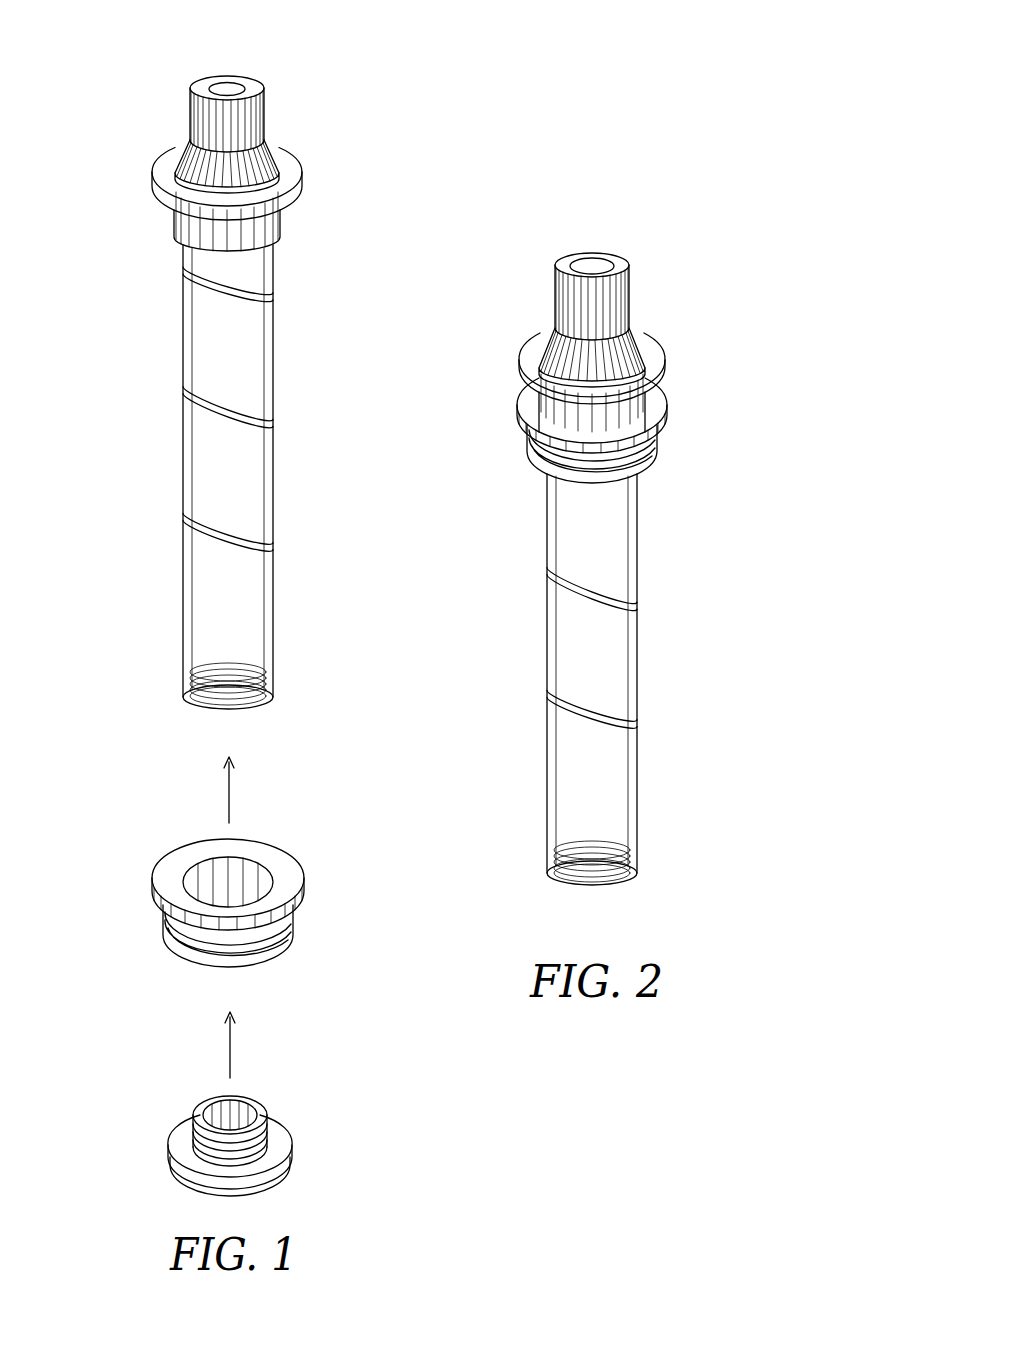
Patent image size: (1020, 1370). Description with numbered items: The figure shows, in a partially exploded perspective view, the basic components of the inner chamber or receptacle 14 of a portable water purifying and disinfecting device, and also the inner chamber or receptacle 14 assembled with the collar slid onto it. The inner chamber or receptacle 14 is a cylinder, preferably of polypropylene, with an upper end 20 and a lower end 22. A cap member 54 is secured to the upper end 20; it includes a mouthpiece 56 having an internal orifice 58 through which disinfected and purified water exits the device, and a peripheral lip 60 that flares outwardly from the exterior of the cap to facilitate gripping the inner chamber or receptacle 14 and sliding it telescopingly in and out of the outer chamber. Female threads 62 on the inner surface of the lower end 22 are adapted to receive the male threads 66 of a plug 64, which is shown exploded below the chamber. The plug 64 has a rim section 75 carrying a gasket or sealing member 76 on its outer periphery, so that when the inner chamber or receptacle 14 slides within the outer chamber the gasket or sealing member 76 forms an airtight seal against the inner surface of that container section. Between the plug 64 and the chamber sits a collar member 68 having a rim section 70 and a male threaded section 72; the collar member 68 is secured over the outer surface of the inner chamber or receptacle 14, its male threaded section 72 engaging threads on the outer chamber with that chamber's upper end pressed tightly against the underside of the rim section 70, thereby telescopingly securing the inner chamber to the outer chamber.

In FIG. 1, the inner chamber or receptacle 14 is at (95, 427).
In FIG. 2, the inner chamber or receptacle 14 is at (508, 592).
In FIG. 1, the upper end 20 is at (183, 265).
In FIG. 2, the lower end 22 is at (548, 868).
In FIG. 1, the cap member 54 is at (267, 163).
In FIG. 2, the cap member 54 is at (633, 335).
In FIG. 1, the mouthpiece 56 is at (247, 130).
In FIG. 1, the internal orifice 58 is at (232, 88).
In FIG. 1, the peripheral lip 60 is at (277, 198).
In FIG. 2, the female threads 62 is at (607, 880).
In FIG. 1, the plug 64 is at (283, 1102).
In FIG. 1, the male threads 66 is at (200, 1117).
In FIG. 1, the collar member 68 is at (283, 847).
In FIG. 2, the collar member 68 is at (668, 404).
In FIG. 1, the rim section 70 is at (285, 887).
In FIG. 1, the male threaded section 72 is at (290, 930).
In FIG. 1, the rim section 75 is at (168, 1143).
In FIG. 1, the gasket or sealing member 76 is at (293, 1145).